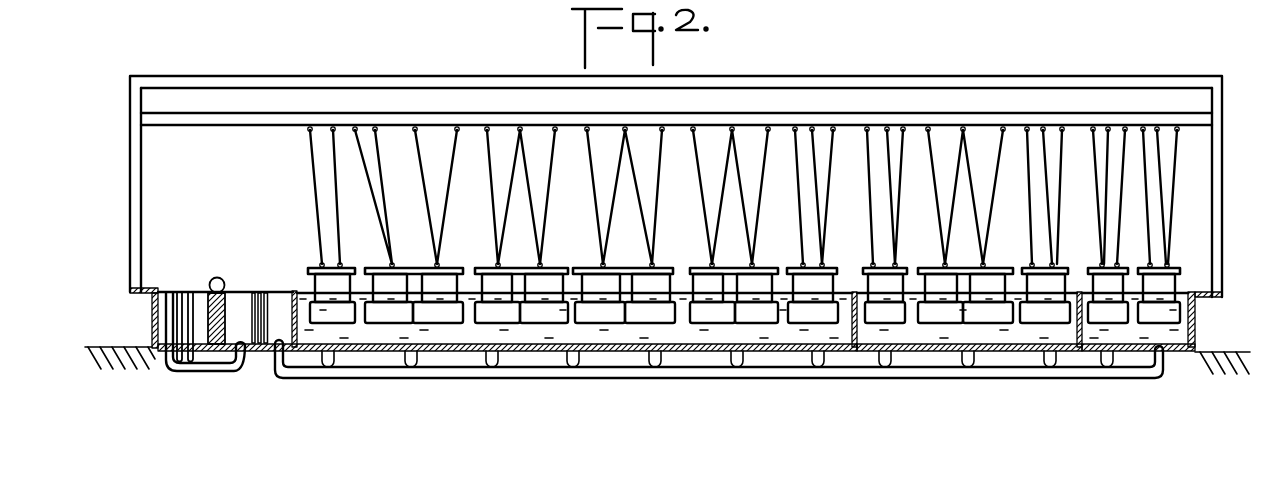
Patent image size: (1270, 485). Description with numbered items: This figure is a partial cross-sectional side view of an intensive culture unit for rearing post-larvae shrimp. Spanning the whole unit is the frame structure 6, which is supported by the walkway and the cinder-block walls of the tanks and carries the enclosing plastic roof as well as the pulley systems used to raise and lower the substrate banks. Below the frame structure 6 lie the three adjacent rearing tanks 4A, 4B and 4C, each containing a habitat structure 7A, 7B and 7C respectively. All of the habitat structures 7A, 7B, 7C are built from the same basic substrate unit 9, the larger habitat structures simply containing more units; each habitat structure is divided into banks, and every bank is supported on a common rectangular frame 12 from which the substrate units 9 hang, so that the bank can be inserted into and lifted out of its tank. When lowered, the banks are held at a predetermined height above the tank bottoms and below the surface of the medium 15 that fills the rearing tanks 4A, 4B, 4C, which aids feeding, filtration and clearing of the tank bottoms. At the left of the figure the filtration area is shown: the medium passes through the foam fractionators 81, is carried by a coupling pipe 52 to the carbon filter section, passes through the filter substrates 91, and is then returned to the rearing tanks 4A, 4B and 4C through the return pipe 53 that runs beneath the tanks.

The frame structure 6 is at (168, 75).
The foam fractionators 81 is at (192, 292).
The filter substrates 91 is at (264, 292).
The coupling pipe 52 is at (232, 373).
The return pipe 53 is at (368, 372).
The rectangular frame 12 is at (375, 268).
The rearing tank 4C is at (470, 291).
The habitat structure 7C is at (572, 287).
The substrate unit 9 is at (490, 321).
The rearing tank 4B is at (861, 292).
The habitat structure 7B is at (914, 287).
The habitat structure 7A is at (1182, 285).
The rearing tank 4A is at (1195, 319).
The medium 15 is at (1197, 337).